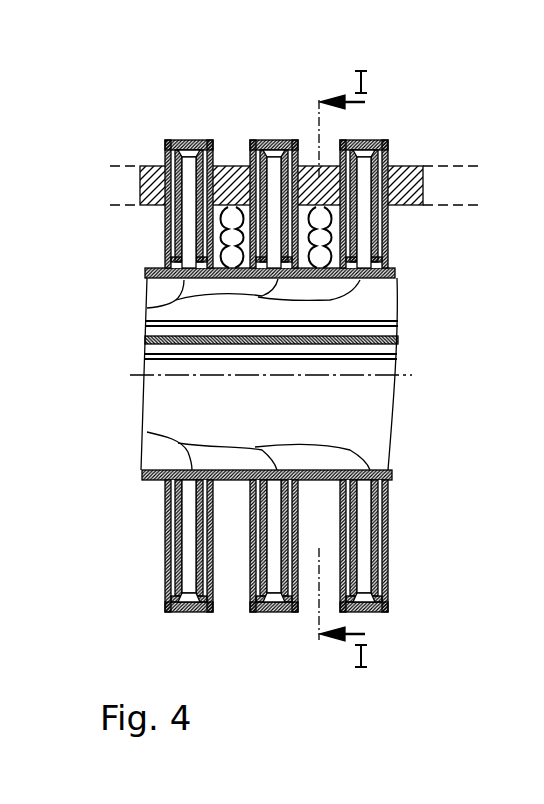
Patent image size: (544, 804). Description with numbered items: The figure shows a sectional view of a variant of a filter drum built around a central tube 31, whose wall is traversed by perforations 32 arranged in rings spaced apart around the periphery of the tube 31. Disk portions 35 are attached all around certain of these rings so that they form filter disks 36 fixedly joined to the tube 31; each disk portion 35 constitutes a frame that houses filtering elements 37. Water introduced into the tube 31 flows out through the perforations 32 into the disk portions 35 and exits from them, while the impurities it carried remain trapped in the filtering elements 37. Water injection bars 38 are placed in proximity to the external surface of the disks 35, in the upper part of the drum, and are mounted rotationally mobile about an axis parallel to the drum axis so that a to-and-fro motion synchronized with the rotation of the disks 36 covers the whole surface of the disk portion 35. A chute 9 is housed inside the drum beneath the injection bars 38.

The chute 9 is at (352, 345).
The tube 31 is at (385, 280).
The perforations 32 is at (147, 308).
The disk portions 35 is at (188, 141).
The filter disks 36 is at (172, 141).
The filtering elements 37 is at (363, 223).
The water injection bars 38 is at (231, 165).